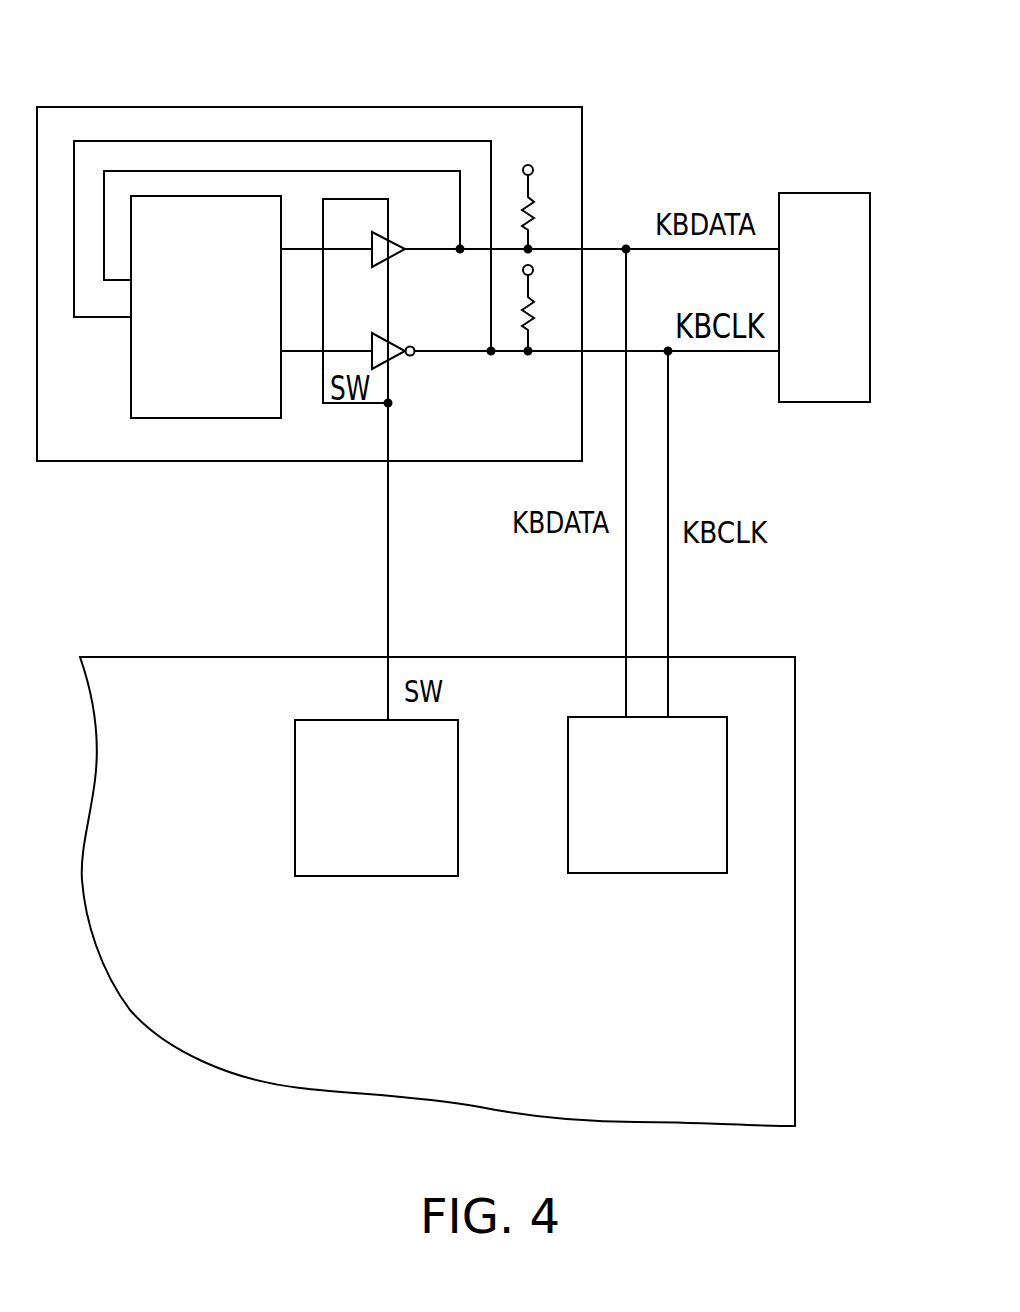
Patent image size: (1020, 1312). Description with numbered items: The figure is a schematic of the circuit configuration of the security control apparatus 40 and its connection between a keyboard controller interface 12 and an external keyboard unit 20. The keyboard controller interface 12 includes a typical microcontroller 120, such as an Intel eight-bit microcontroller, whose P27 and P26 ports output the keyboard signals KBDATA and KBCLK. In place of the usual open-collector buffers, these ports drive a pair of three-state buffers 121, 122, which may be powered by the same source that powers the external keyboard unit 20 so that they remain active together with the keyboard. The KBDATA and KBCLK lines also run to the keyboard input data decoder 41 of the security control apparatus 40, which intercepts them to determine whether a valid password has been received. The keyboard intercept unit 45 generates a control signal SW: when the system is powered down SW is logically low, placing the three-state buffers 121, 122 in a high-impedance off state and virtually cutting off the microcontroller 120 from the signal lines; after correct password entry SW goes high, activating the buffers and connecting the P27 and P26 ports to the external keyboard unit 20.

The keyboard controller interface 12 is at (275, 107).
The external keyboard unit 20 is at (828, 193).
The microcontroller 120 is at (220, 418).
The three-state buffer 121 is at (398, 256).
The three-state buffer 122 is at (397, 357).
The security control apparatus 40 is at (795, 936).
The keyboard input data decoder 41 is at (661, 873).
The keyboard intercept unit 45 is at (375, 876).